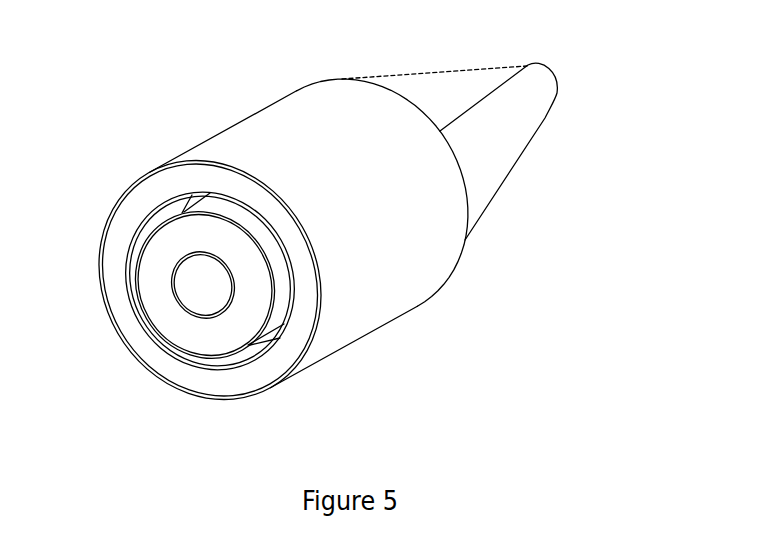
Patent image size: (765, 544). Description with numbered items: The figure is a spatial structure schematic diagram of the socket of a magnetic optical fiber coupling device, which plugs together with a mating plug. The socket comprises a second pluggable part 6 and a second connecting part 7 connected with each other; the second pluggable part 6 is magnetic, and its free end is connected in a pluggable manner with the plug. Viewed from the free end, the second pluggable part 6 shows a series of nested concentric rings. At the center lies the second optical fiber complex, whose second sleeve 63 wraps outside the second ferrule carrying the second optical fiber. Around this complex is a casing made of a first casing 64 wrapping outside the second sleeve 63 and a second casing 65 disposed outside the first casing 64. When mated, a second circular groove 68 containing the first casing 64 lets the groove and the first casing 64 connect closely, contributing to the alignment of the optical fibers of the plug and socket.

The second pluggable part 6 is at (373, 270).
The second connecting part 7 is at (498, 130).
The second sleeve 63 is at (210, 316).
The first casing 64 is at (193, 325).
The second casing 65 is at (120, 318).
The second circular groove 68 is at (128, 262).